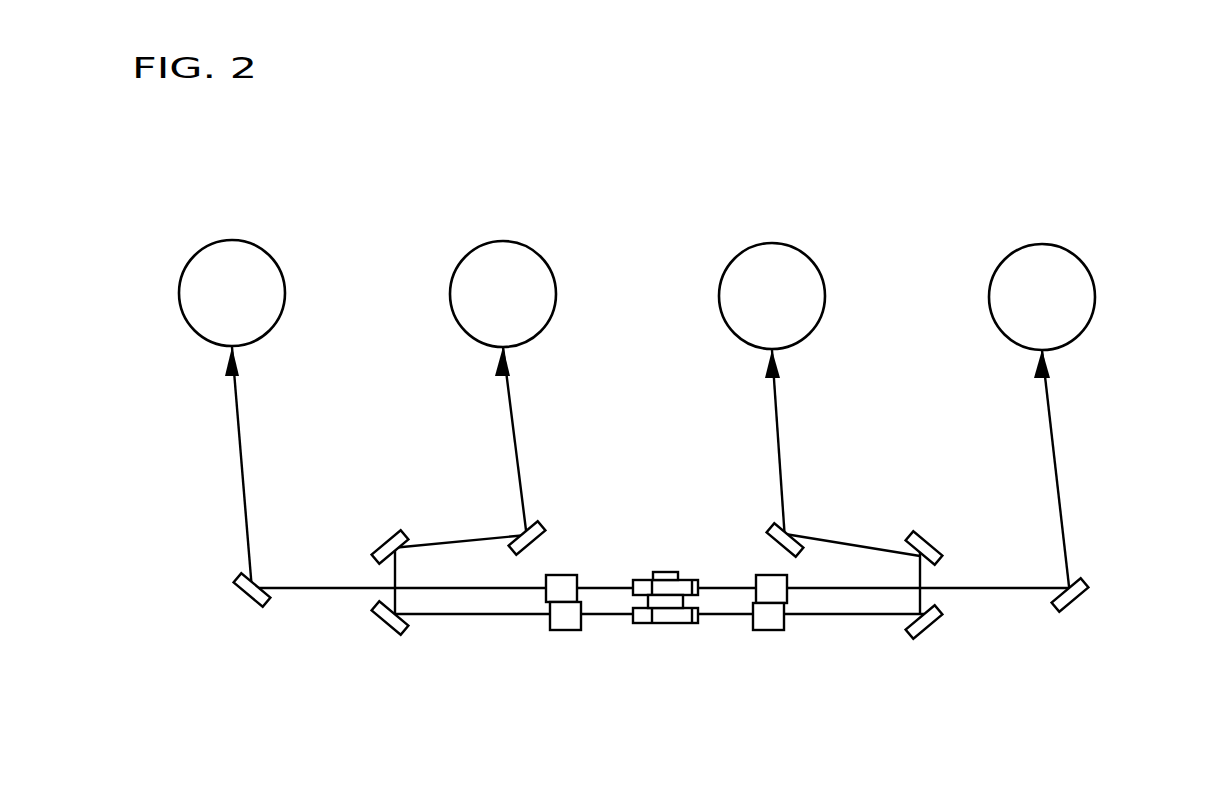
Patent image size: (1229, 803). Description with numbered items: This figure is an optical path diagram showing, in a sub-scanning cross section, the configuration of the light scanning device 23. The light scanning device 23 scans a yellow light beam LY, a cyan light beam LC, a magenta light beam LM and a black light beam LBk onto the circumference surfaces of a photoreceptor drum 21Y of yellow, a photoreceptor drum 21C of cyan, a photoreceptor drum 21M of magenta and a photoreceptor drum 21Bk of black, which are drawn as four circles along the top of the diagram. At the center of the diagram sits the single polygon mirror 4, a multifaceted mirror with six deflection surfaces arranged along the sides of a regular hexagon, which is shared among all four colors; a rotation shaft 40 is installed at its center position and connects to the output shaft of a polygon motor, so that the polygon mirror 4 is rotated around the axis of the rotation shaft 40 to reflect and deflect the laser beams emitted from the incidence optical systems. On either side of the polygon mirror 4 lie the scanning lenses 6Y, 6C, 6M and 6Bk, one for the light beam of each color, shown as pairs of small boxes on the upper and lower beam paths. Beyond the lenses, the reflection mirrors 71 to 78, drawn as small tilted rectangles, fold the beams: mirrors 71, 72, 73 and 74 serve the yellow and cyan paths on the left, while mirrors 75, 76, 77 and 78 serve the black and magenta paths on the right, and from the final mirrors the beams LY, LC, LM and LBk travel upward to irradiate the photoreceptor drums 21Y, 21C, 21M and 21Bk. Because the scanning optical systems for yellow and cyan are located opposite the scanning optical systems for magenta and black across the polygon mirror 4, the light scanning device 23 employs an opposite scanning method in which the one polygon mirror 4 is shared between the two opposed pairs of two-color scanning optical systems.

The polygon mirror 4 is at (684, 526).
The rotation shaft 40 is at (663, 572).
The light scanning device 23 is at (1115, 501).
The photoreceptor drum of yellow 21Y is at (233, 240).
The photoreceptor drum of cyan 21C is at (502, 242).
The photoreceptor drum of magenta 21M is at (772, 244).
The photoreceptor drum of black 21Bk is at (1042, 245).
The yellow light beam LY is at (240, 402).
The cyan light beam LC is at (508, 385).
The magenta light beam LM is at (779, 402).
The black light beam LBk is at (1049, 404).
The reflection mirror 71 is at (244, 600).
The reflection mirror 72 is at (380, 621).
The reflection mirror 73 is at (380, 543).
The reflection mirror 74 is at (535, 522).
The reflection mirror 75 is at (1081, 598).
The reflection mirror 76 is at (940, 631).
The reflection mirror 77 is at (919, 538).
The reflection mirror 78 is at (778, 528).
The scanning lens 6Y is at (562, 575).
The scanning lens 6C is at (565, 630).
The scanning lens 6M is at (768, 630).
The scanning lens 6Bk is at (770, 575).